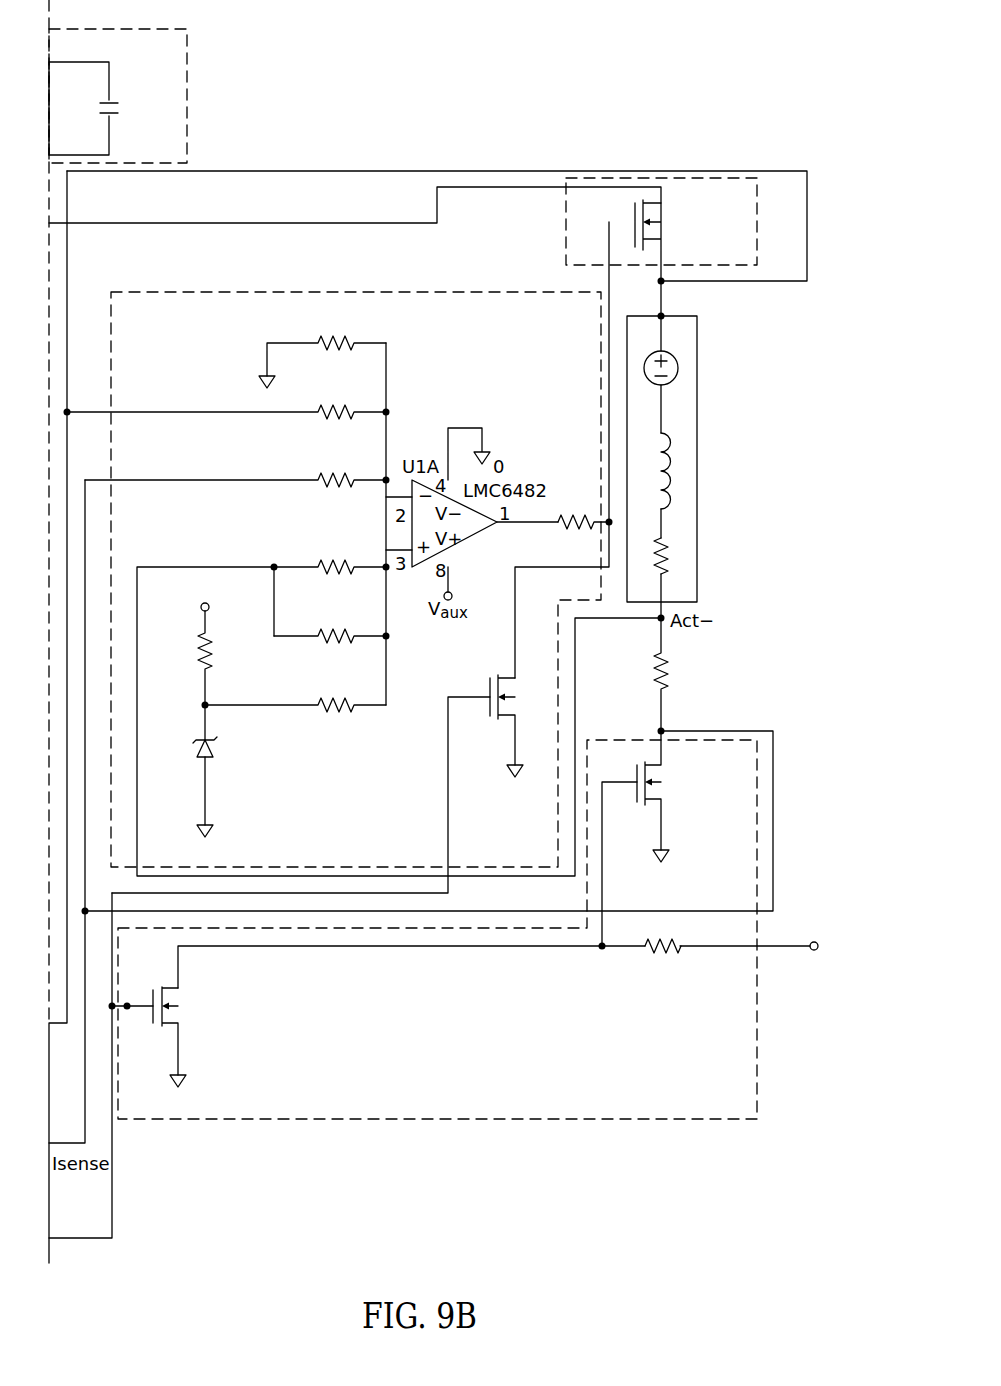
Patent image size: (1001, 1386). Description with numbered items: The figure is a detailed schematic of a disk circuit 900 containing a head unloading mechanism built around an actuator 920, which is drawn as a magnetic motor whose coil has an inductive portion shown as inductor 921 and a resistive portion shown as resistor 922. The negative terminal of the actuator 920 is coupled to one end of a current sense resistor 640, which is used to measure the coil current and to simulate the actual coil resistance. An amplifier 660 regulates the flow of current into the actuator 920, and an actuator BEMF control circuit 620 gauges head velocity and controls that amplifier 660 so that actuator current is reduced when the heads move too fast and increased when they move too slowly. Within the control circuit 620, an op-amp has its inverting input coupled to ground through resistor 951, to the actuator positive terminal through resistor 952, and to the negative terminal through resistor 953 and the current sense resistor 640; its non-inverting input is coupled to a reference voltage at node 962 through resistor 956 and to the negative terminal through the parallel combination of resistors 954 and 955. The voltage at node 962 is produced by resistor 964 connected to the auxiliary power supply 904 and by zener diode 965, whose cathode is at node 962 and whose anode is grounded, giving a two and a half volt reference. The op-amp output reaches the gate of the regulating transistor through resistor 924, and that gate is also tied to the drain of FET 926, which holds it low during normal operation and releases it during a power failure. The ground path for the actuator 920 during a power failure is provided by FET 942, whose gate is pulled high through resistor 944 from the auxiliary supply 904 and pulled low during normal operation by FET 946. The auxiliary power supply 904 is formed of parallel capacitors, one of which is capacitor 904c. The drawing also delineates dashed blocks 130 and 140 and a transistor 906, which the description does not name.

The low-side switch circuit block 130 is at (757, 1058).
The capacitor circuit block 140 is at (187, 60).
The actuator BEMF control circuit 620 is at (160, 292).
The current sense resistor 640 is at (676, 674).
The amplifier 660 is at (566, 238).
The disk circuit 900 is at (703, 120).
The auxiliary power supply 904 is at (104, 52).
The capacitor 904c is at (106, 110).
The MOSFET M9 906 is at (672, 216).
The actuator 920 is at (683, 316).
The inductor 921 is at (672, 458).
The resistor 922 is at (672, 557).
The resistor 924 is at (556, 530).
The FET 926 is at (485, 716).
The FET 942 is at (680, 802).
The resistor 944 is at (737, 950).
The FET 946 is at (197, 1036).
The resistor 951 is at (315, 360).
The resistor 952 is at (226, 414).
The resistor 953 is at (235, 486).
The resistor 954 is at (330, 571).
The resistor 955 is at (330, 640).
The resistor 956 is at (295, 710).
The node 962 is at (194, 717).
The resistor 964 is at (207, 644).
The zener diode 965 is at (228, 779).